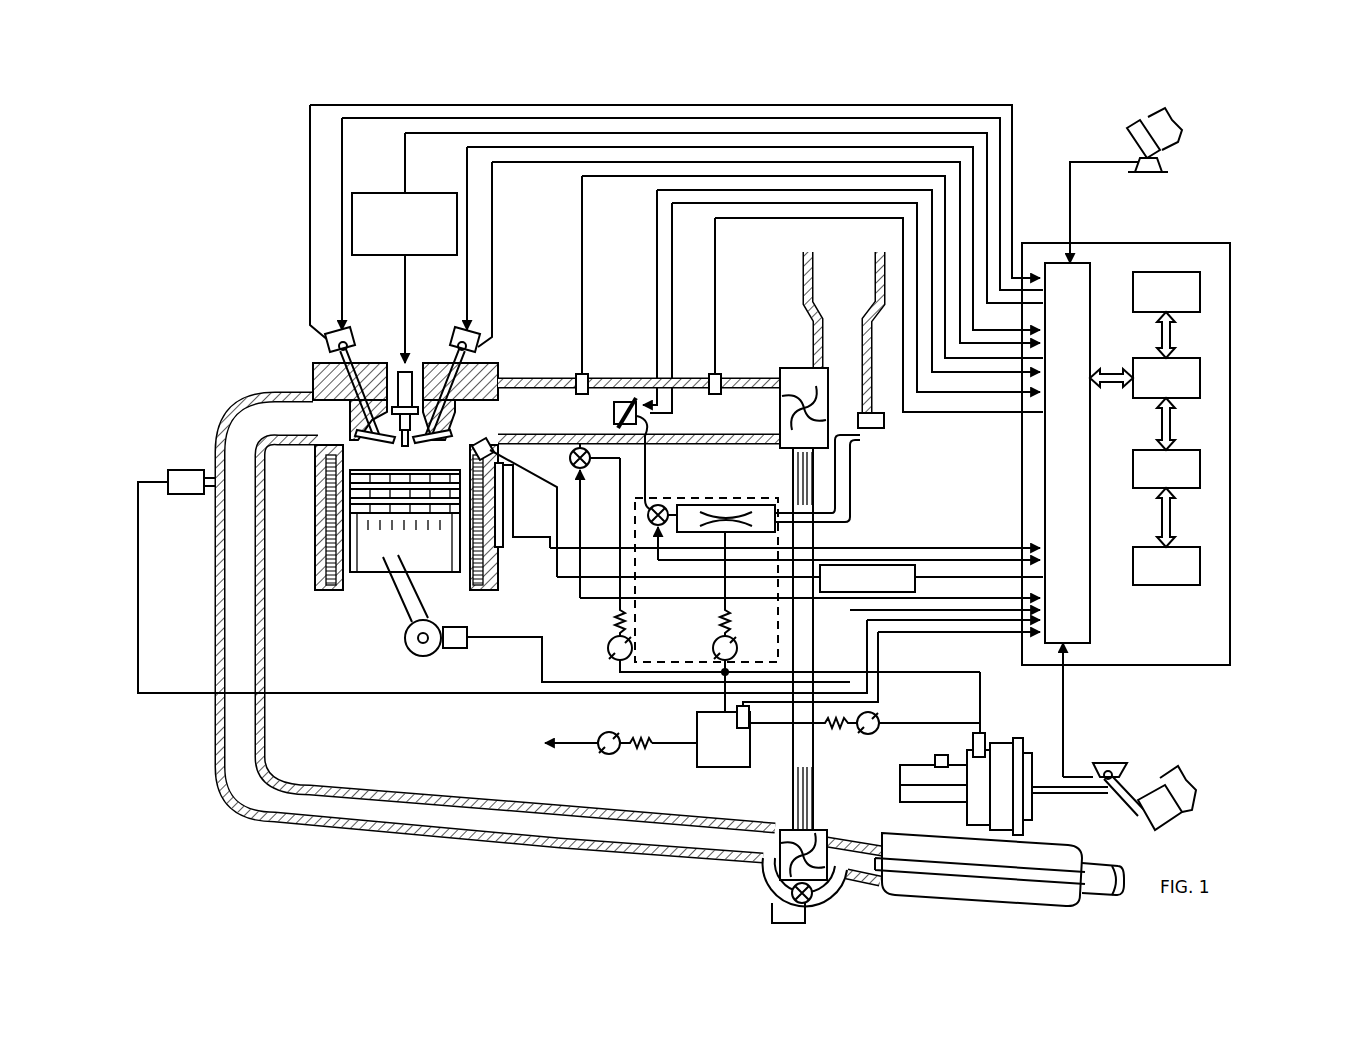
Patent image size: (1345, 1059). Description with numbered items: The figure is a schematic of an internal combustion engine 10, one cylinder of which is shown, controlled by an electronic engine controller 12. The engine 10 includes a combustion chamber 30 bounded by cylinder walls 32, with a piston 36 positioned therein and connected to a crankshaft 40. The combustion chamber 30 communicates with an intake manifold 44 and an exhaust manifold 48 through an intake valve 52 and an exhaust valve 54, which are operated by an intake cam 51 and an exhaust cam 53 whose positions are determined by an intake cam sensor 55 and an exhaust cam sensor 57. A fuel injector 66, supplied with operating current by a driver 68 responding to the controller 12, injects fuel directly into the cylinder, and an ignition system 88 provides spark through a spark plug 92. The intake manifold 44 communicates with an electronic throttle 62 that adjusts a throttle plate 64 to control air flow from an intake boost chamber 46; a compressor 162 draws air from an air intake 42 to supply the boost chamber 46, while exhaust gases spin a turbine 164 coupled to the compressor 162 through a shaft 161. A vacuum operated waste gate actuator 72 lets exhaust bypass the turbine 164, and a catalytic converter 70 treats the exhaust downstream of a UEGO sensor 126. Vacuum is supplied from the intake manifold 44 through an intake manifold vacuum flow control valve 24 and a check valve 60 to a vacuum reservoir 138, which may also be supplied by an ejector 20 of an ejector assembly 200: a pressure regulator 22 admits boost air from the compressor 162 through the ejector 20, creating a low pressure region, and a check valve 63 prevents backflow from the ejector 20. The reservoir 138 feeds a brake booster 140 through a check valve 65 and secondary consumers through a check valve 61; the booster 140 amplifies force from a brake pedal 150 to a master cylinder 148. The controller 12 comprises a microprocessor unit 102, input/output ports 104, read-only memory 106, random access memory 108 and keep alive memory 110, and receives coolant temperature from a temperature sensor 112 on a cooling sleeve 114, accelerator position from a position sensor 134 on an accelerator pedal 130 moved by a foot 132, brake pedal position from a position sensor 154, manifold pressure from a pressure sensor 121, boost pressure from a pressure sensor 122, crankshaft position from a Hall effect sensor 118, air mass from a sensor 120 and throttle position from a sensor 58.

The internal combustion engine 10 is at (250, 318).
The electronic engine controller 12 is at (1230, 243).
The ejector 20 is at (715, 504).
The pressure regulator 22 is at (652, 524).
The intake manifold vacuum flow control valve 24 is at (570, 460).
The combustion chamber 30 is at (326, 552).
The cylinder walls 32 is at (343, 590).
The piston 36 is at (390, 560).
The crankshaft 40 is at (412, 655).
The air intake 42 is at (854, 332).
The intake manifold 44 is at (639, 411).
The intake boost chamber 46 is at (709, 410).
The exhaust manifold 48 is at (497, 627).
The intake cam 51 is at (462, 332).
The intake valve 52 is at (440, 432).
The exhaust cam 53 is at (343, 332).
The exhaust valve 54 is at (345, 440).
The intake cam sensor 55 is at (472, 348).
The exhaust cam sensor 57 is at (330, 348).
The throttle position sensor 58 is at (650, 448).
The check valve 60 is at (628, 643).
The check valve 61 is at (613, 754).
The electronic throttle 62 is at (618, 400).
The check valve 63 is at (736, 642).
The throttle plate 64 is at (630, 396).
The check valve 65 is at (864, 734).
The fuel injector 66 is at (494, 470).
The driver 68 is at (915, 585).
The catalytic converter 70 is at (882, 895).
The waste gate actuator 72 is at (775, 898).
The ignition system 88 is at (355, 193).
The spark plug 92 is at (408, 370).
The microprocessor unit 102 is at (1200, 378).
The input/output ports 104 is at (1090, 268).
The read-only memory 106 is at (1200, 290).
The random access memory 108 is at (1200, 470).
The keep alive memory 110 is at (1200, 565).
The temperature sensor 112 is at (503, 525).
The cooling sleeve 114 is at (496, 575).
The Hall effect sensor 118 is at (458, 648).
The air mass sensor 120 is at (876, 428).
The pressure sensor 121 is at (578, 374).
The pressure sensor 122 is at (720, 376).
The Universal Exhaust Gas Oxygen sensor 126 is at (168, 474).
The accelerator pedal 130 is at (1133, 143).
The foot 132 is at (1182, 130).
The position sensor 134 is at (1165, 166).
The vacuum reservoir 138 is at (697, 716).
The brake booster 140 is at (1000, 743).
The master cylinder 148 is at (900, 778).
The brake pedal 150 is at (1128, 818).
The position sensor 154 is at (1095, 768).
The shaft 161 is at (793, 470).
The compressor 162 is at (805, 368).
The turbine 164 is at (778, 830).
The ejector assembly 200 is at (780, 545).